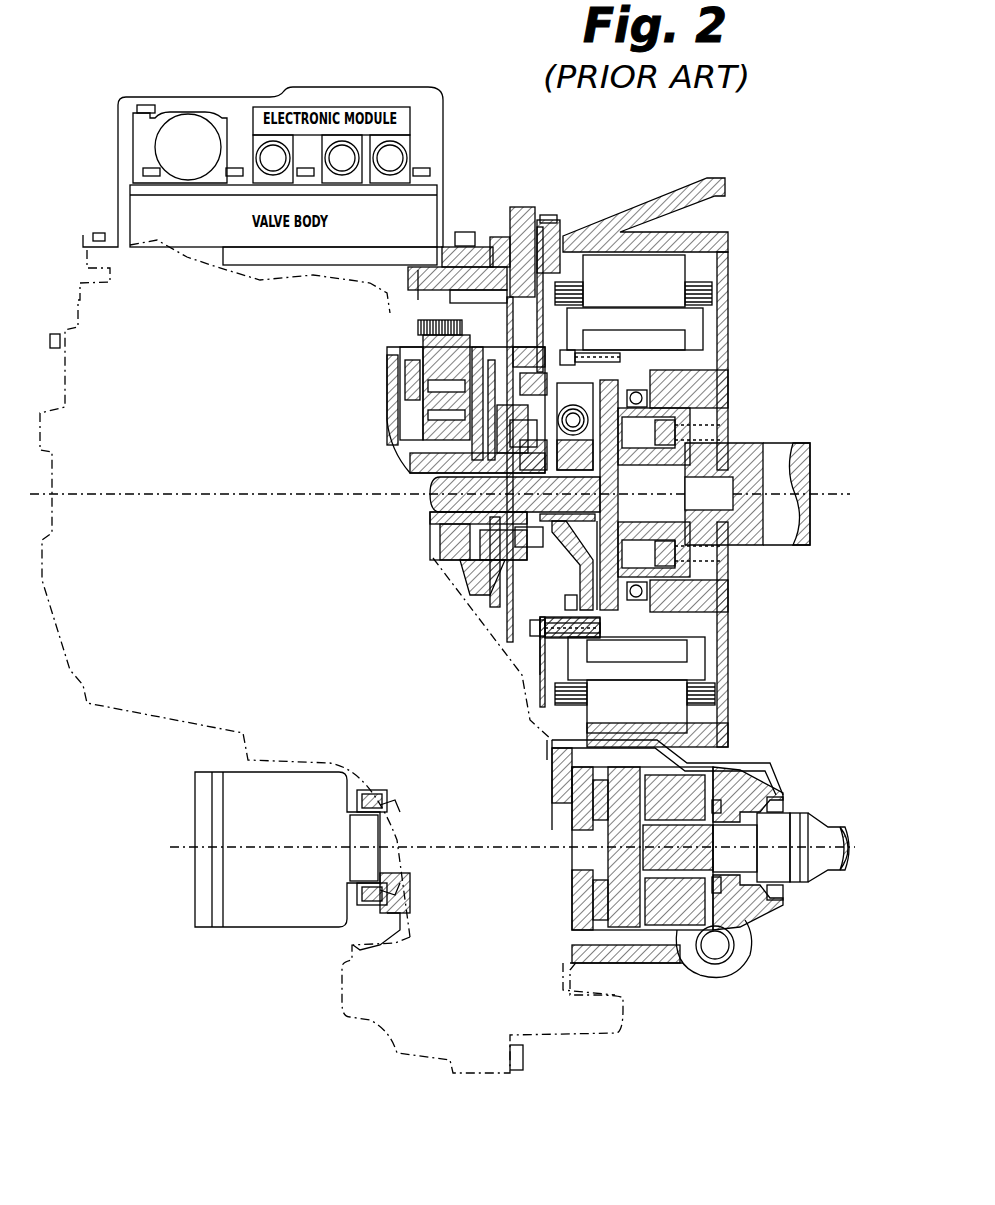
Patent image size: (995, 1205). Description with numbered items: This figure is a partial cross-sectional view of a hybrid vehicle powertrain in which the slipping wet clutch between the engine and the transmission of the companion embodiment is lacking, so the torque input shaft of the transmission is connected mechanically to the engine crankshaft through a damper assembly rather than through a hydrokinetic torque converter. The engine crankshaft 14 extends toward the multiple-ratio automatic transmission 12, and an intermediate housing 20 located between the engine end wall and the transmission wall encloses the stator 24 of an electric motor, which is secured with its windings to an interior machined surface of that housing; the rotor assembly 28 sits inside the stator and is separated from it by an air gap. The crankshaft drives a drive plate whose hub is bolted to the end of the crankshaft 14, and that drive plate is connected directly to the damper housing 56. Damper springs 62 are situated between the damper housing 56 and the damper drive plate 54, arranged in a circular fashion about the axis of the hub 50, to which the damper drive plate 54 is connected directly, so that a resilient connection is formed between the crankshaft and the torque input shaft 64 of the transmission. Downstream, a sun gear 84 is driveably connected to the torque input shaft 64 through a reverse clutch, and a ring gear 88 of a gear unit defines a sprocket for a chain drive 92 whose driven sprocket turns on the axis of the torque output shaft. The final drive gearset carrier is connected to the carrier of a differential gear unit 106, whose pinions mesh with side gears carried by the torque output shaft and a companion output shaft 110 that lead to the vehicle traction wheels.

The multiple-ratio automatic transmission 12 is at (392, 316).
The intermediate housing 20 is at (650, 200).
The stator 24 is at (670, 263).
The rotor assembly 28 is at (693, 325).
The crankshaft 14 is at (787, 527).
The hub 50 is at (537, 502).
The damper springs 62 is at (550, 405).
The chain drive 92 is at (417, 330).
The ring gear 88 is at (393, 364).
The sun gear 84 is at (407, 460).
The torque input shaft 64 is at (437, 508).
The damper housing 56 is at (560, 575).
The damper drive plate 54 is at (553, 618).
The differential gear unit 106 is at (703, 772).
The companion output shaft 110 is at (743, 862).